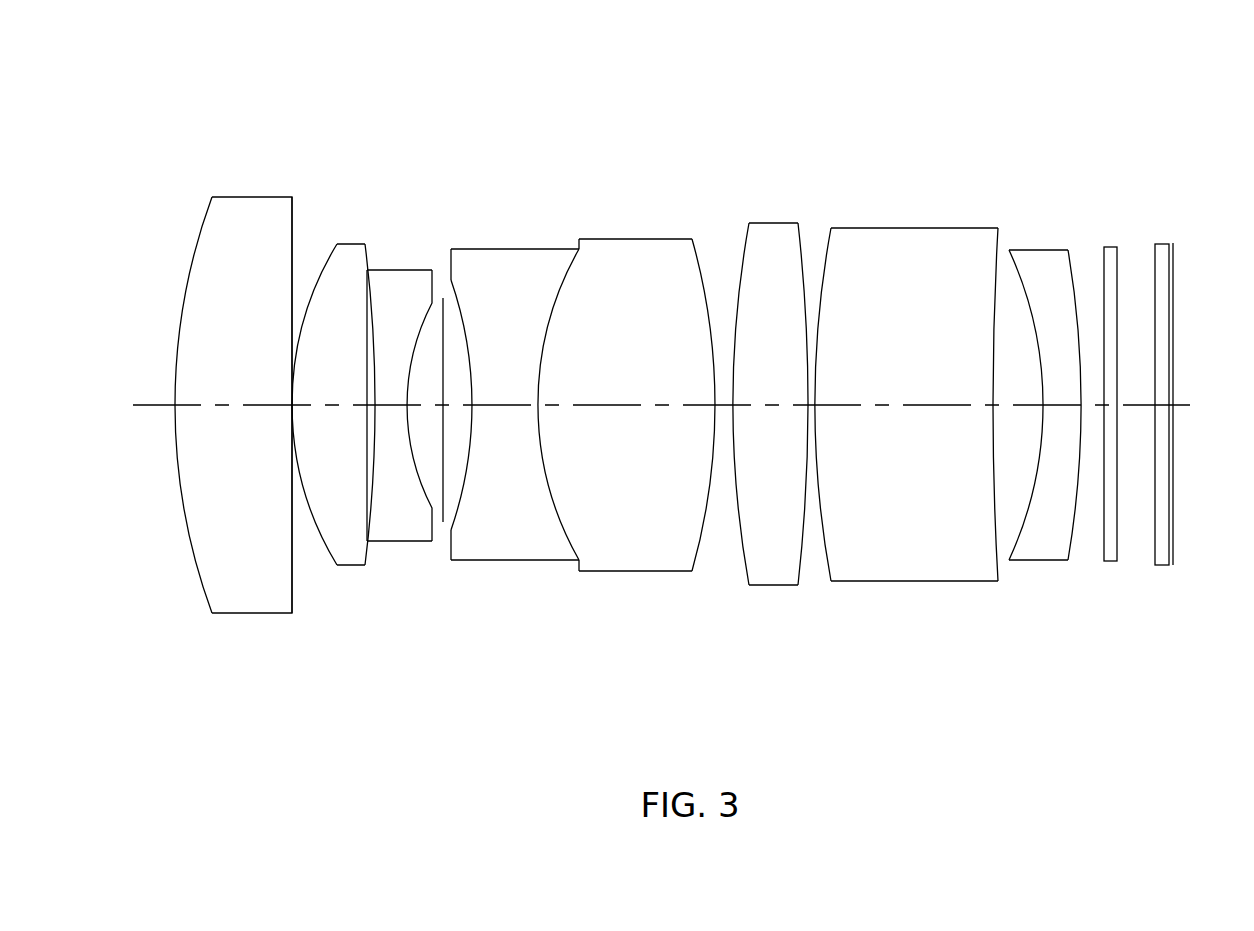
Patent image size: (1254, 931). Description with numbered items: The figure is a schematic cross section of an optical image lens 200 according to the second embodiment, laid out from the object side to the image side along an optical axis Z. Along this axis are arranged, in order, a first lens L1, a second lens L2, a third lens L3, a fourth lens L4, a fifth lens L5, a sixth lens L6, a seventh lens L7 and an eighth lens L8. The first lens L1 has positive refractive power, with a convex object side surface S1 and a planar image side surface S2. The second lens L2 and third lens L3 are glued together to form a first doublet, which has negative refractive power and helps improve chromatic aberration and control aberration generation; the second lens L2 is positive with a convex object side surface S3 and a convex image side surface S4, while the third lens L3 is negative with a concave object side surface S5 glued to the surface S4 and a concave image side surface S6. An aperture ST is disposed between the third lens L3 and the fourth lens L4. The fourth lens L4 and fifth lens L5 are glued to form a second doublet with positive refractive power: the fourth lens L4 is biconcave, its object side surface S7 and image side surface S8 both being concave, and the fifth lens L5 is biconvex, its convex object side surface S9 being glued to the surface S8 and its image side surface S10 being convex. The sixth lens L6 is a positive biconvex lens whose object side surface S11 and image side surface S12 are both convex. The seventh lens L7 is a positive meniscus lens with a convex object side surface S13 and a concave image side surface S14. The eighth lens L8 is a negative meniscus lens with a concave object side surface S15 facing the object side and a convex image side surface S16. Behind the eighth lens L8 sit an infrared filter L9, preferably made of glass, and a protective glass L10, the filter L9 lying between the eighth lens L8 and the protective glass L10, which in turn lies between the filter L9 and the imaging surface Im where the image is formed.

The optical image lens 200 is at (167, 138).
The optical axis Z is at (646, 407).
The first lens L1 is at (262, 218).
The second lens L2 is at (348, 262).
The third lens L3 is at (398, 310).
The aperture ST is at (443, 298).
The fourth lens L4 is at (530, 272).
The fifth lens L5 is at (627, 270).
The sixth lens L6 is at (768, 253).
The seventh lens L7 is at (866, 272).
The eighth lens L8 is at (1045, 272).
The infrared filter L9 is at (1108, 255).
The protective glass L10 is at (1165, 255).
The imaging surface Im is at (1175, 277).
The object side surface of first lens S1 is at (200, 581).
The image side surface of first lens S2 is at (293, 588).
The object side surface of second lens S3 is at (318, 532).
The image side surface of second lens S4 is at (368, 520).
The object side surface of third lens S5 is at (372, 505).
The image side surface of third lens S6 is at (427, 495).
The object side surface of fourth lens S7 is at (460, 497).
The image side surface of fourth lens S8 is at (563, 517).
The object side surface of fifth lens S9 is at (562, 518).
The image side surface of fifth lens S10 is at (698, 572).
The object side surface of sixth lens S11 is at (739, 560).
The image side surface of sixth lens S12 is at (800, 567).
The object side surface of seventh lens S13 is at (818, 562).
The image side surface of seventh lens S14 is at (998, 532).
The object side surface of eighth lens S15 is at (1026, 520).
The image side surface of eighth lens S16 is at (1072, 540).